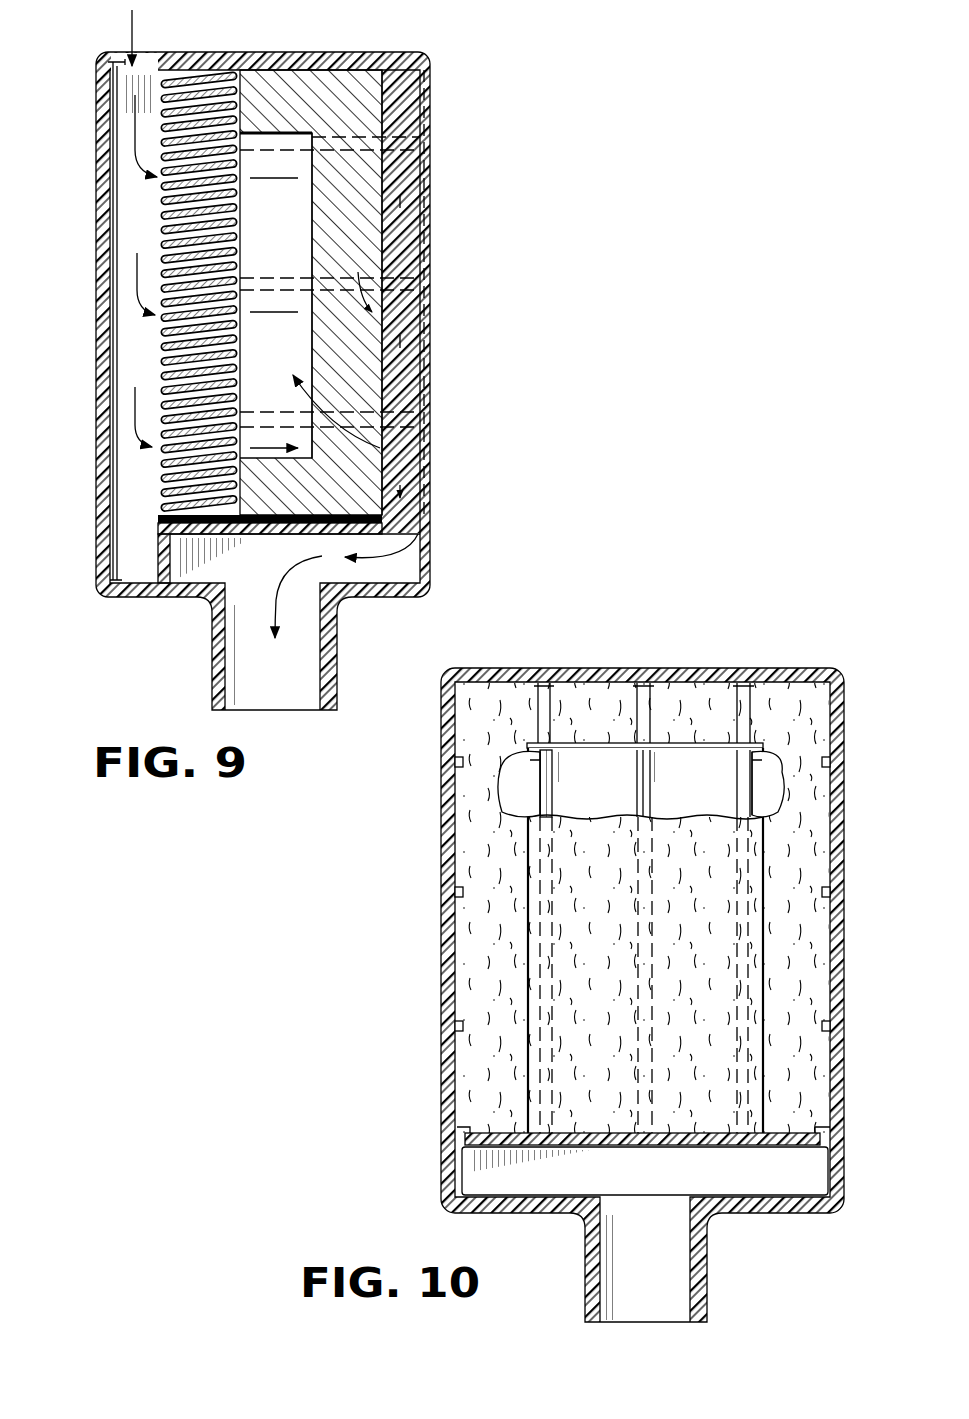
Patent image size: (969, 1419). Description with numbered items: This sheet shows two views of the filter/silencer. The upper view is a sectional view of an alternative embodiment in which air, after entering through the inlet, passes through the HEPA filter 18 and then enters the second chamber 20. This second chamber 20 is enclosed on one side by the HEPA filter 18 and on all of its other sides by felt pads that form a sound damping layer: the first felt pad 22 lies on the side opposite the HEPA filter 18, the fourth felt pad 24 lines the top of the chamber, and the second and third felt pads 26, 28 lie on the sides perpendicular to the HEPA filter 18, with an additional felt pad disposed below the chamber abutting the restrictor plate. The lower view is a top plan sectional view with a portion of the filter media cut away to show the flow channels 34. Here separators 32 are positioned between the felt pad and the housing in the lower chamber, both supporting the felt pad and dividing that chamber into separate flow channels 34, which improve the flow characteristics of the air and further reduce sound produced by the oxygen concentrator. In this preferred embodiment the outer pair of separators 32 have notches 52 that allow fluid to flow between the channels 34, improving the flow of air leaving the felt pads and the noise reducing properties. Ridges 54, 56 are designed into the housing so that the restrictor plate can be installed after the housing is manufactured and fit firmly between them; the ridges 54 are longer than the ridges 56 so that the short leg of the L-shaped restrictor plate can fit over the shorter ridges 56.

In FIG. 9, the HEPA filter 18 is at (160, 203).
In FIG. 9, the second chamber 20 is at (380, 448).
In FIG. 9, the first felt pad 22 is at (358, 272).
In FIG. 10, the first felt pad 22 is at (646, 938).
In FIG. 9, the fourth felt pad 24 is at (266, 95).
In FIG. 10, the fourth felt pad 24 is at (603, 700).
In FIG. 10, the second felt pad 26 is at (478, 912).
In FIG. 9, the third felt pad 28 is at (265, 507).
In FIG. 10, the separators 32 is at (543, 1050).
In FIG. 10, the flow channels 34 is at (642, 788).
In FIG. 10, the notches 52 is at (538, 770).
In FIG. 10, the ridges 54 is at (822, 1125).
In FIG. 10, the ridges 56 is at (822, 1150).